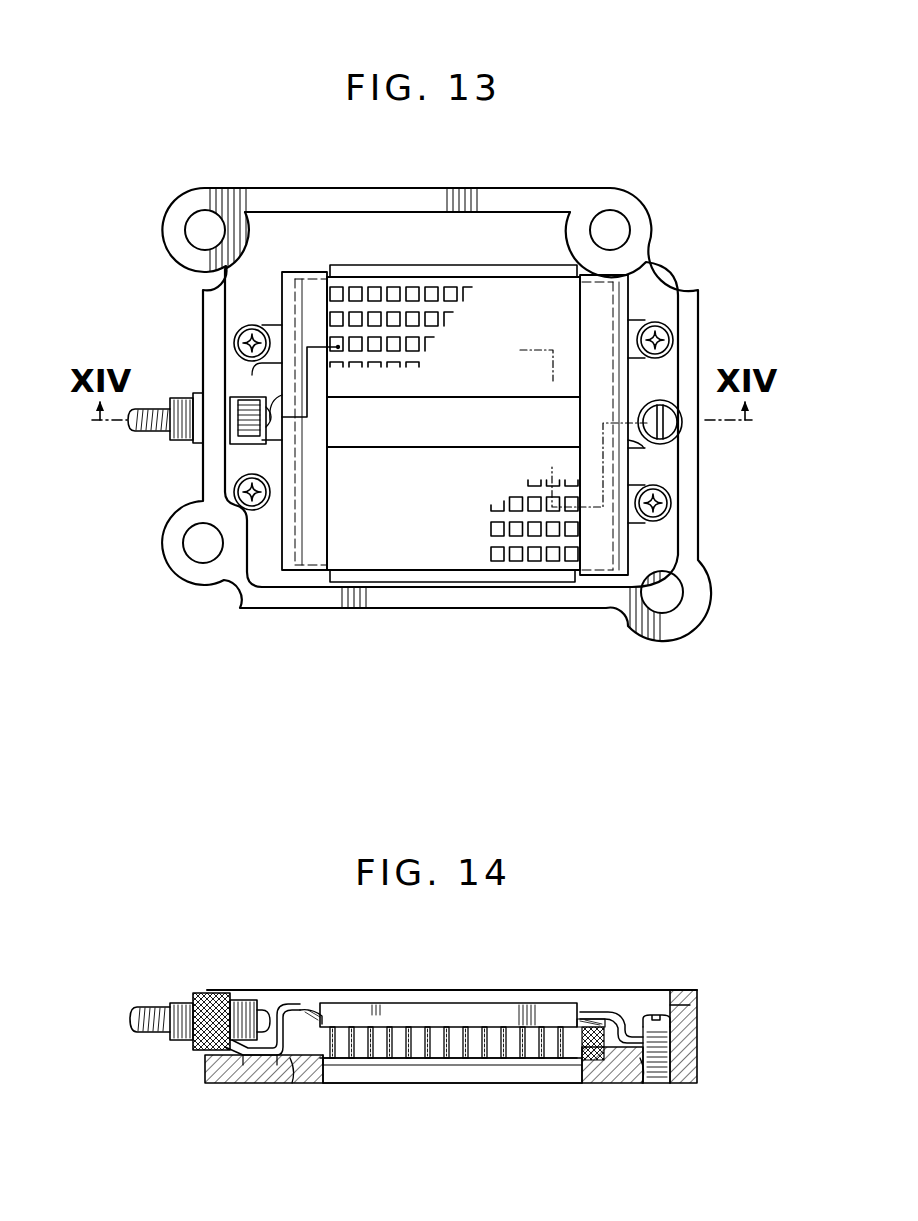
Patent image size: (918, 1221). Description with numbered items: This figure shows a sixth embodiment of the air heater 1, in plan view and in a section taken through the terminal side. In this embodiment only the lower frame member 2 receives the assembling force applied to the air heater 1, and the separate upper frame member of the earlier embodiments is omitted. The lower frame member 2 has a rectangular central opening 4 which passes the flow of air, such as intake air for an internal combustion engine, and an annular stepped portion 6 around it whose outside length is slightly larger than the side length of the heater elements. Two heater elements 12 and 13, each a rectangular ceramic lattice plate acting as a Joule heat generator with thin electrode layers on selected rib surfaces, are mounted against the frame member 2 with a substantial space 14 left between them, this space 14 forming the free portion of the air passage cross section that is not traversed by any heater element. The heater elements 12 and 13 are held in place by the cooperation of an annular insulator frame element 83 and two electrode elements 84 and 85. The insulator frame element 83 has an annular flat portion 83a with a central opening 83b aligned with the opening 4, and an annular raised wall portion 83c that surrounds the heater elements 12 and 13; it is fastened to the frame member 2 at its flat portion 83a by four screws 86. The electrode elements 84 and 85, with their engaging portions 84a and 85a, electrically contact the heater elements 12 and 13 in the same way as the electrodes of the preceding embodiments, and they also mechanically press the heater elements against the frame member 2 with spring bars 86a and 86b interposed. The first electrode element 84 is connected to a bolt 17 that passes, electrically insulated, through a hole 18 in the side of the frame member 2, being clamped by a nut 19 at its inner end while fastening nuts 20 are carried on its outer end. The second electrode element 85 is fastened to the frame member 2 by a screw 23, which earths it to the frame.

In FIG. 13, the air heater 1 is at (700, 275).
In FIG. 14, the air heater 1 is at (700, 1055).
In FIG. 13, the lower frame member 2 is at (698, 298).
In FIG. 14, the lower frame member 2 is at (698, 1024).
In FIG. 14, the central opening 4 is at (325, 1070).
In FIG. 13, the annular stepped portion 6 is at (510, 228).
In FIG. 14, the annular stepped portion 6 is at (676, 994).
In FIG. 13, the heater element 12 is at (542, 556).
In FIG. 13, the heater element 13 is at (376, 288).
In FIG. 14, the heater element 13 is at (460, 1026).
In FIG. 13, the space 14 is at (458, 425).
In FIG. 13, the bolt 17 is at (145, 432).
In FIG. 14, the bolt 17 is at (142, 1008).
In FIG. 14, the hole 18 is at (208, 1060).
In FIG. 13, the nut 19 is at (248, 402).
In FIG. 14, the nut 19 is at (246, 1003).
In FIG. 13, the fastening nuts 20 is at (179, 401).
In FIG. 14, the fastening nuts 20 is at (180, 1004).
In FIG. 13, the screw 23 is at (672, 428).
In FIG. 14, the screw 23 is at (697, 1006).
In FIG. 13, the annular insulator frame element 83 is at (437, 583).
In FIG. 14, the annular insulator frame element 83 is at (480, 1068).
In FIG. 14, the annular flat portion 83a is at (600, 1065).
In FIG. 13, the central opening 83b is at (394, 570).
In FIG. 14, the central opening 83b is at (360, 1066).
In FIG. 14, the annular raised wall portion 83c is at (293, 1078).
In FIG. 13, the electrode element 84 is at (275, 433).
In FIG. 14, the electrode element 84 is at (250, 1062).
In FIG. 13, the portion of electrode element 84a is at (312, 450).
In FIG. 14, the portion of electrode element 84a is at (296, 1008).
In FIG. 13, the electrode element 85 is at (632, 442).
In FIG. 14, the electrode element 85 is at (648, 1017).
In FIG. 13, the portion of electrode element 85a is at (582, 433).
In FIG. 14, the portion of electrode element 85a is at (612, 1012).
In FIG. 13, the screws 86 is at (257, 327).
In FIG. 14, the spring bar 86a is at (318, 1022).
In FIG. 14, the spring bar 86b is at (580, 1022).